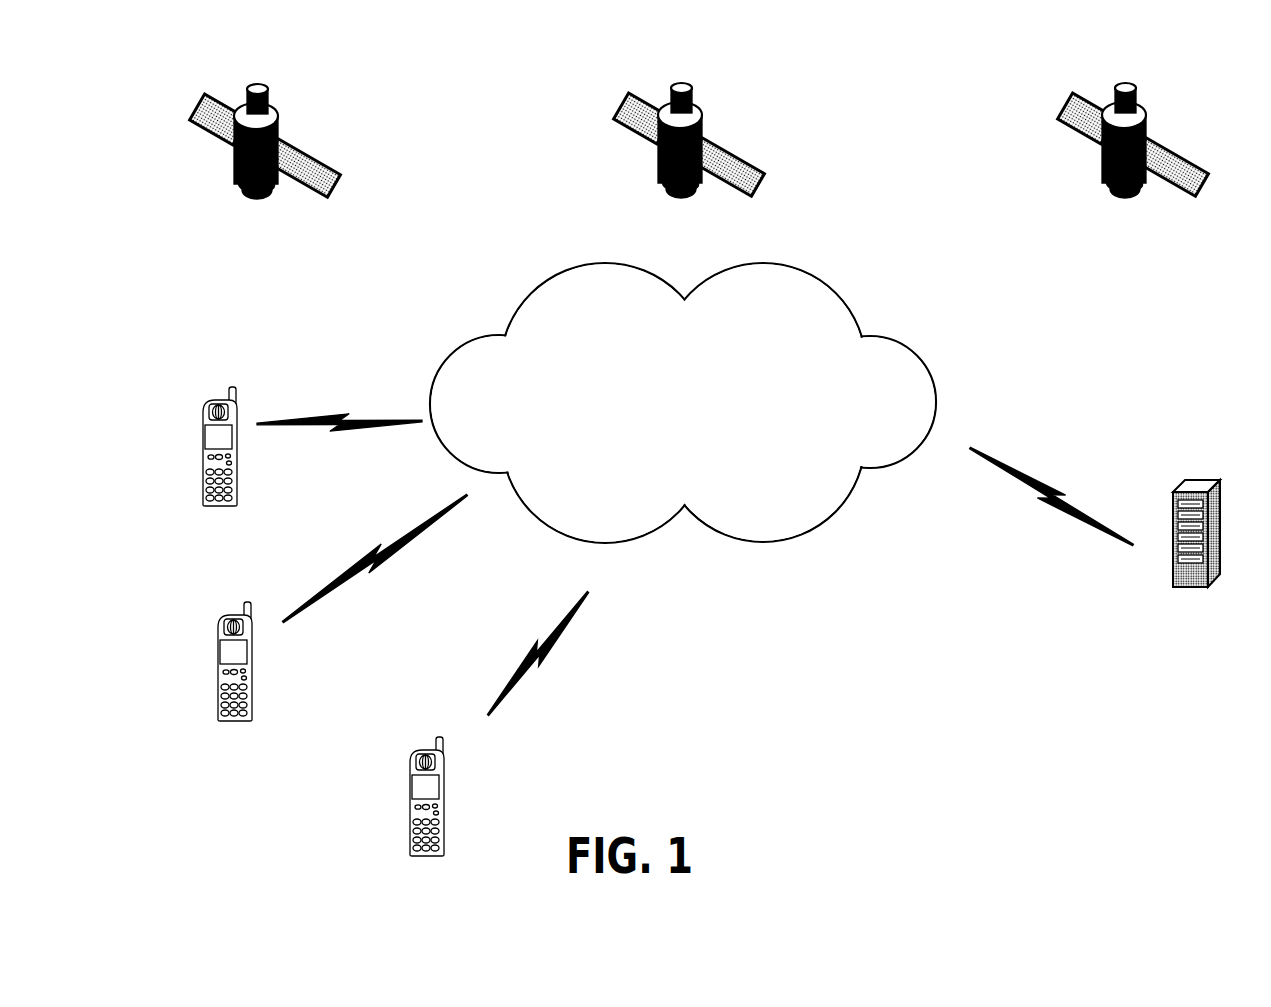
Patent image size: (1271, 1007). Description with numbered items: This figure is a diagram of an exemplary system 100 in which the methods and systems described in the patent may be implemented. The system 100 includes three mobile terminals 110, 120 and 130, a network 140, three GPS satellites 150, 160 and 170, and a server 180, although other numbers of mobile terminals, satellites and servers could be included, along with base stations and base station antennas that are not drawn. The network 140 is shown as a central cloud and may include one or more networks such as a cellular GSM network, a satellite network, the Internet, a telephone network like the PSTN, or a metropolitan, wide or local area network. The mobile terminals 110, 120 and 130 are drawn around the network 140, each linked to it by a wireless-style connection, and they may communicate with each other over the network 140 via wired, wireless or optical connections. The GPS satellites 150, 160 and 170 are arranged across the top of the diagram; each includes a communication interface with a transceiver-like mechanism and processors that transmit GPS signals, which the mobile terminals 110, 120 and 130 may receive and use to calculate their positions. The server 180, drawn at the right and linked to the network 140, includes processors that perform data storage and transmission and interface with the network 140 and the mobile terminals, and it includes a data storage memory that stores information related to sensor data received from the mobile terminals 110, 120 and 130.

The system 100 is at (714, 463).
The mobile terminal 110 is at (312, 430).
The mobile terminal 120 is at (343, 607).
The mobile terminal 130 is at (499, 724).
The network 140 is at (683, 403).
The GPS satellite 150 is at (265, 136).
The GPS satellite 160 is at (704, 136).
The GPS satellite 170 is at (1133, 134).
The server 180 is at (1104, 547).